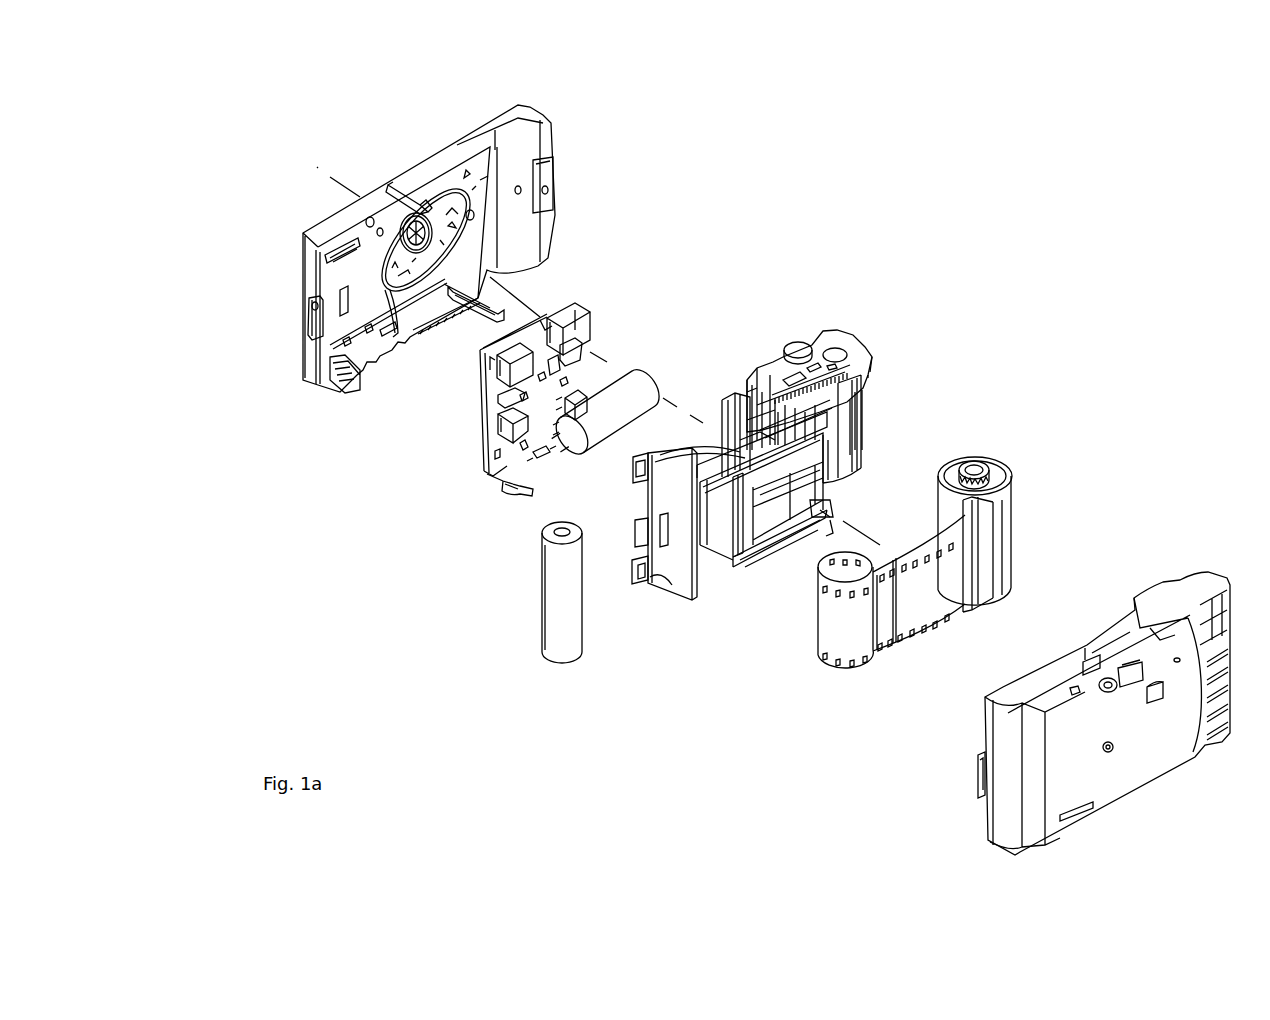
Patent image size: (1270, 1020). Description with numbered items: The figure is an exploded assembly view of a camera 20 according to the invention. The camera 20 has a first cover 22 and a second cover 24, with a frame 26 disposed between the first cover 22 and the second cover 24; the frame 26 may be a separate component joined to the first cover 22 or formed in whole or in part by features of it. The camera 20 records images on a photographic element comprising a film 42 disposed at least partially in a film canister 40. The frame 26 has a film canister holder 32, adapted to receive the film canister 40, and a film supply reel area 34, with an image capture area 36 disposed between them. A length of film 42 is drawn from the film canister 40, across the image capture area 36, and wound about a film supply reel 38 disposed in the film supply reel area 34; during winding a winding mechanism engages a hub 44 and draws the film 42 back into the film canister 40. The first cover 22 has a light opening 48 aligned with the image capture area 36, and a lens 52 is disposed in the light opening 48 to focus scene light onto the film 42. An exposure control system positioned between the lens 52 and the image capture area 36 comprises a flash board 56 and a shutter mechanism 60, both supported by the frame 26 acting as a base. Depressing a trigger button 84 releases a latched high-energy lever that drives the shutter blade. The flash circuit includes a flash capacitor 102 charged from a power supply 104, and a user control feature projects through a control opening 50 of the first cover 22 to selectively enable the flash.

The camera 20 is at (742, 212).
The first cover 22 is at (544, 163).
The second cover 24 is at (1182, 600).
The frame 26 is at (860, 405).
The film canister holder 32 is at (834, 443).
The film supply reel area 34 is at (716, 522).
The image capture area 36 is at (776, 493).
The film supply reel 38 is at (712, 545).
The film canister 40 is at (992, 534).
The film 42 is at (932, 567).
The hub 44 is at (979, 450).
The light opening 48 is at (421, 207).
The control opening 50 is at (322, 318).
The lens 52 is at (400, 210).
The flash board 56 is at (497, 432).
The shutter mechanism 60 is at (717, 432).
The trigger button 84 is at (791, 343).
The flash capacitor 102 is at (621, 381).
The power supply 104 is at (545, 621).